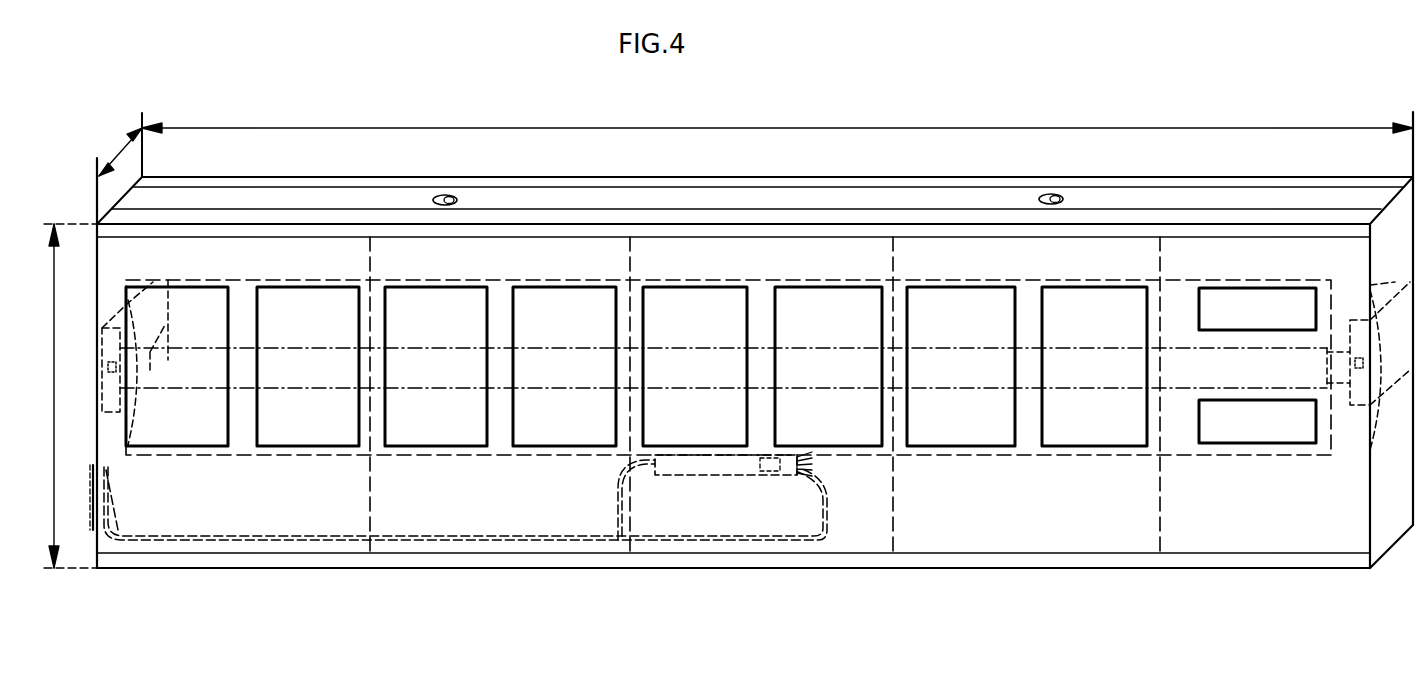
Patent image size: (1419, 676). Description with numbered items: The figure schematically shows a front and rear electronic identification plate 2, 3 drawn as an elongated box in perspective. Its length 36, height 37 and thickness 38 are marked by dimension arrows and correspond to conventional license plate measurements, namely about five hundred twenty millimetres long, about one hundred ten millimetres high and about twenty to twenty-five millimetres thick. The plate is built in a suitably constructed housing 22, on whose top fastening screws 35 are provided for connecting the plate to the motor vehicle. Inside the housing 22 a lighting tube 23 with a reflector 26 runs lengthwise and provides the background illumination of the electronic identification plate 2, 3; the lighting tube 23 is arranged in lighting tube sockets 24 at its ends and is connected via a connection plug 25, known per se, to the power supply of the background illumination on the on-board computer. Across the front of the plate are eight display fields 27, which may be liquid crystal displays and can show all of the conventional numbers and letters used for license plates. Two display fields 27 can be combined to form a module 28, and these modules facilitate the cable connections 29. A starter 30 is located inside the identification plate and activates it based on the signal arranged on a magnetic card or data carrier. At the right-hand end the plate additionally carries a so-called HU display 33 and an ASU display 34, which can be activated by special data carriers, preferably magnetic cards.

The front electronic identification plate 2 is at (883, 160).
The rear electronic identification plate 3 is at (755, 340).
The housing 22 is at (217, 177).
The lighting tube 23 is at (291, 368).
The lighting tube sockets 24 is at (112, 351).
The connection plug 25 is at (92, 535).
The reflector 26 is at (500, 437).
The display fields 27 is at (305, 432).
The module 28 is at (853, 530).
The cable connections 29 is at (810, 462).
The starter 30 is at (712, 463).
The HU display 33 is at (1240, 430).
The ASU display 34 is at (1232, 300).
The fastening screws 35 is at (447, 195).
The length 36 is at (803, 126).
The height 37 is at (70, 396).
The thickness 38 is at (104, 166).